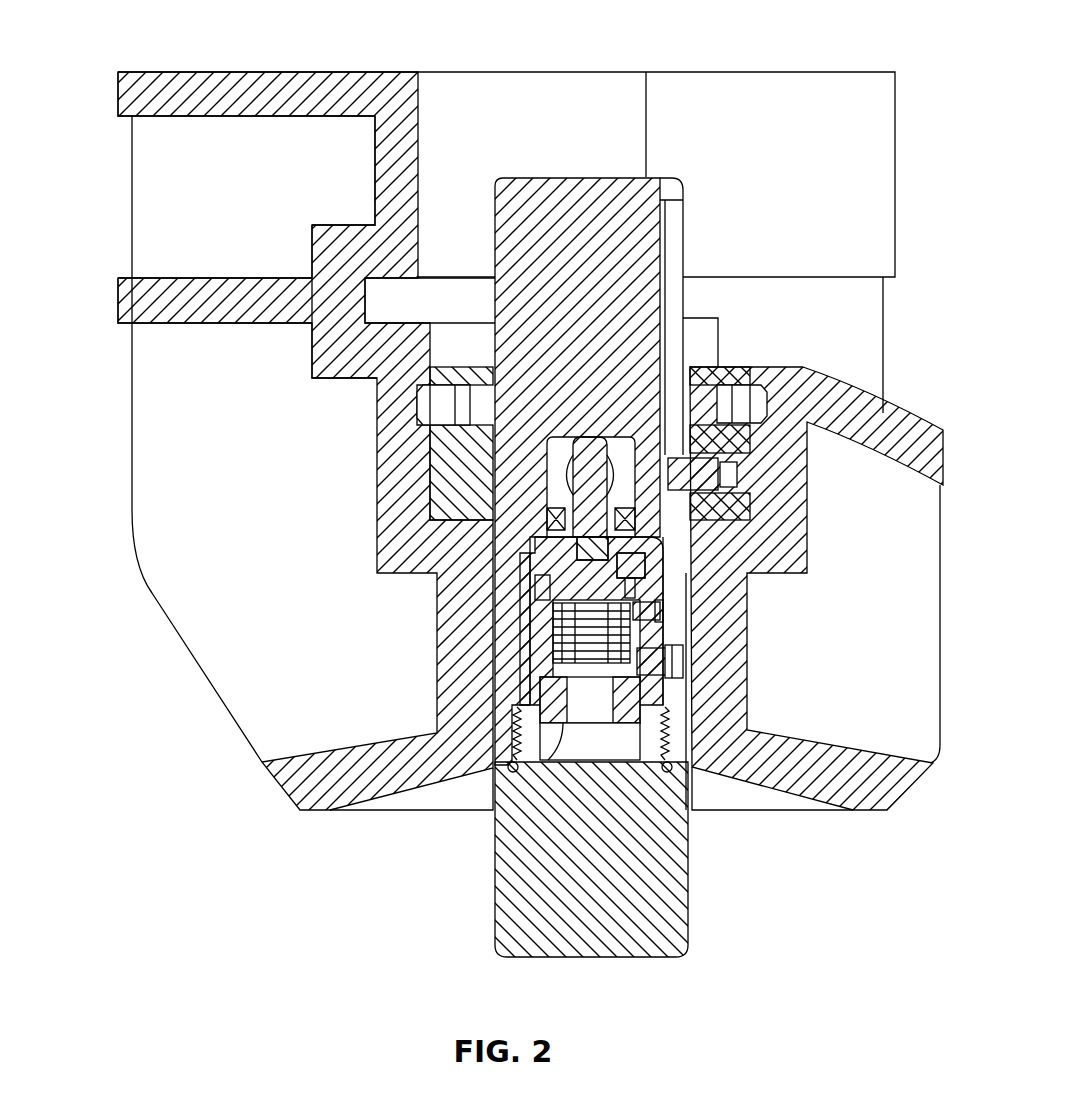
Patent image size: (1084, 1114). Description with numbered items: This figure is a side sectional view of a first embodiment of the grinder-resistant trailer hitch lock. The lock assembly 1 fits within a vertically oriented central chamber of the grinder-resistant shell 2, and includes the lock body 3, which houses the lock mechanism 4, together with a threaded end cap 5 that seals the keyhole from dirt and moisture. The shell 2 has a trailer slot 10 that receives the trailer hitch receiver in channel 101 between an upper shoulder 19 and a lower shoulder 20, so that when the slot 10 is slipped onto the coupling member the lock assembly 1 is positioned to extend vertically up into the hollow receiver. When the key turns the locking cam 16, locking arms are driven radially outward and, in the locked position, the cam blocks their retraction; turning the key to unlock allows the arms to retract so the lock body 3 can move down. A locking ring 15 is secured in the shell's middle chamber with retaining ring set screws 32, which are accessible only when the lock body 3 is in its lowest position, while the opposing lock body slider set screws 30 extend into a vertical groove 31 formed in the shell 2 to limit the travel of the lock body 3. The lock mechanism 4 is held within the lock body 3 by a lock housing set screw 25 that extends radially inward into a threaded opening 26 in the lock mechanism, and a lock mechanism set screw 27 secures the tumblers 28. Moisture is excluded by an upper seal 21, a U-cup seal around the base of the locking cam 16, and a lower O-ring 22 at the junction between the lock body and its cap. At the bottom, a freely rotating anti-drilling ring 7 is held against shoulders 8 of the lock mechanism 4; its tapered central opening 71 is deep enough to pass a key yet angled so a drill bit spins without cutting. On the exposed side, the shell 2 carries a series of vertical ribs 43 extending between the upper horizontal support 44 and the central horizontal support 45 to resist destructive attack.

The lock assembly 1 is at (470, 115).
The grinder-resistant shell 2 is at (268, 72).
The lock body 3 is at (560, 177).
The lock mechanism 4 is at (560, 645).
The threaded end cap 5 is at (495, 905).
The anti-drilling ring 7 is at (550, 698).
The shoulders 8 is at (687, 660).
The trailer slot 10 is at (373, 307).
The locking ring 15 is at (430, 460).
The locking cam 16 is at (590, 458).
The upper shoulder 19 is at (373, 340).
The lower shoulder 20 is at (370, 345).
The upper seal 21 is at (543, 522).
The lower O-ring 22 is at (690, 812).
The lock housing set screw 25 is at (672, 678).
The threaded opening 26 is at (660, 612).
The lock mechanism set screw 27 is at (690, 590).
The tumblers 28 is at (553, 655).
The lock body slider set screws 30 is at (735, 472).
The vertical groove 31 is at (675, 400).
The retaining ring set screws 32 is at (417, 410).
The vertical ribs 43 is at (188, 470).
The upper horizontal support 44 is at (117, 92).
The central horizontal support 45 is at (117, 307).
The tapered central opening 71 is at (560, 760).
The channel 101 is at (787, 291).